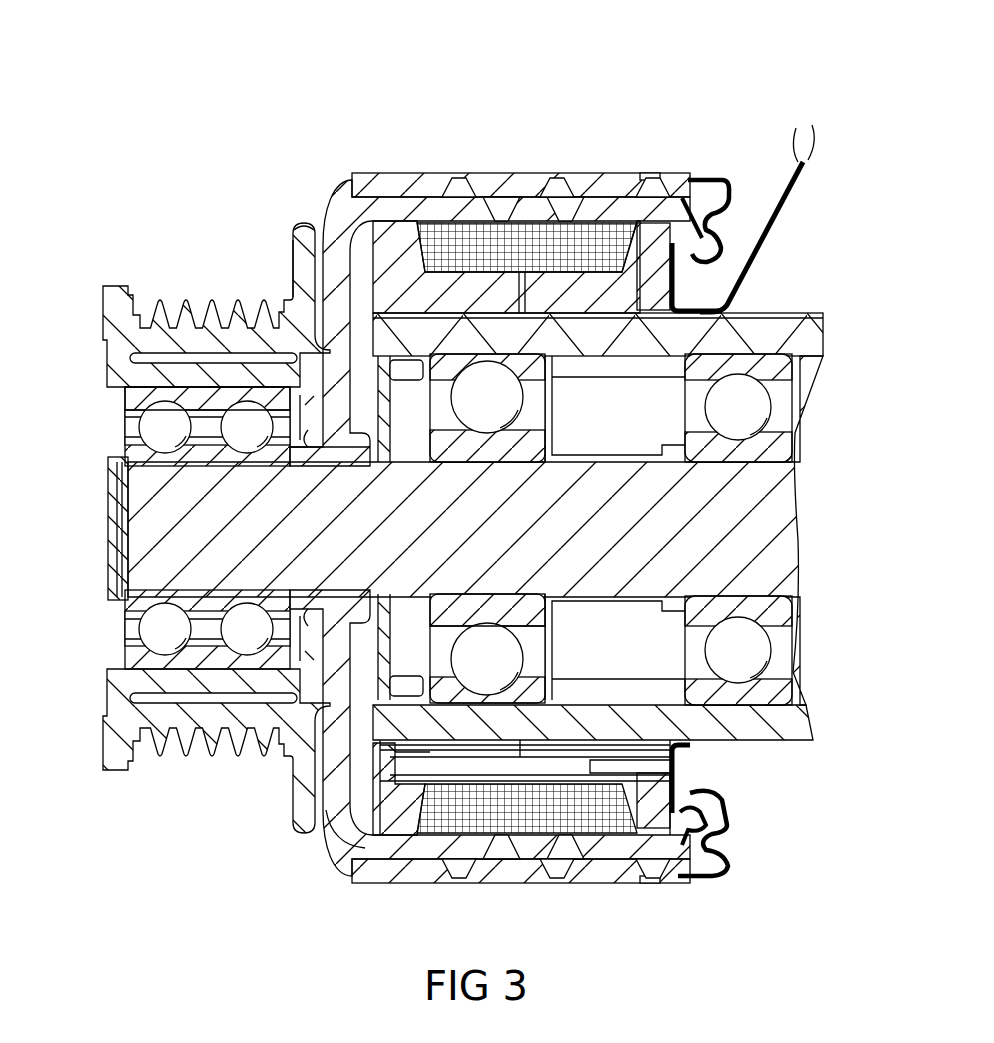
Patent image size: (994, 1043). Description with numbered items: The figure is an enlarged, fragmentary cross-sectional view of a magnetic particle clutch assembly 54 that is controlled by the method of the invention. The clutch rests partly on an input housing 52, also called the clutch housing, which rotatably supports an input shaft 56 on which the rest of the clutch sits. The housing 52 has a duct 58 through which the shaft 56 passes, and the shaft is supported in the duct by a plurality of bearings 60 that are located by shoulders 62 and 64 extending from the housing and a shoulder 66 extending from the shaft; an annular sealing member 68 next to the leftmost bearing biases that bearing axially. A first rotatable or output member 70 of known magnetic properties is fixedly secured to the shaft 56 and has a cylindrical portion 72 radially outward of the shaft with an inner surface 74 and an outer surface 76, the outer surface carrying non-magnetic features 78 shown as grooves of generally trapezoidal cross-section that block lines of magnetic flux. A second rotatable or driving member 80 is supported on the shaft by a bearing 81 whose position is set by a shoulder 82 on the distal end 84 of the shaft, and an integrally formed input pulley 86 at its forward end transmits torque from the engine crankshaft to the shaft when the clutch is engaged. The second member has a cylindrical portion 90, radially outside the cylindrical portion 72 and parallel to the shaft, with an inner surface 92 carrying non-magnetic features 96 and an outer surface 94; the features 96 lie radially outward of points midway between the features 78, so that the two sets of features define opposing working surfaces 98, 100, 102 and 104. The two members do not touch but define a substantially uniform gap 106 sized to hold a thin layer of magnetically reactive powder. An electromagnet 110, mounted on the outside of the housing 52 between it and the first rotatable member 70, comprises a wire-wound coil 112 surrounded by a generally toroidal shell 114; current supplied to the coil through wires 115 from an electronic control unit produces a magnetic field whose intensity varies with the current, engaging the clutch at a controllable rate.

The input housing 52 is at (750, 730).
The clutch assembly 54 is at (203, 90).
The input shaft 56 is at (747, 500).
The duct 58 is at (607, 690).
The bearings 60 is at (515, 592).
The shoulder 62 is at (482, 640).
The shoulder 64 is at (737, 360).
The shoulder 66 is at (672, 470).
The annular sealing member 68 is at (316, 298).
The first rotatable member 70 is at (292, 470).
The cylindrical portion 72 is at (392, 220).
The inner surface 74 is at (400, 222).
The outer surface 76 is at (314, 205).
The features 78 is at (413, 222).
The second rotatable member 80 is at (112, 278).
The bearing 81 is at (132, 447).
The shoulder 82 is at (128, 472).
The distal end 84 is at (112, 570).
The input pulley 86 is at (110, 733).
The cylindrical portion 90 is at (527, 877).
The inner surface 92 is at (385, 840).
The outer surface 94 is at (390, 887).
The features 96 is at (447, 873).
The working surface 98 is at (443, 197).
The working surface 100 is at (497, 197).
The working surface 102 is at (537, 197).
The working surface 104 is at (590, 197).
The gap 106 is at (690, 863).
The electromagnet 110 is at (697, 278).
The wire-wound coil 112 is at (703, 257).
The toroidal shell 114 is at (392, 284).
The wires 115 is at (803, 186).